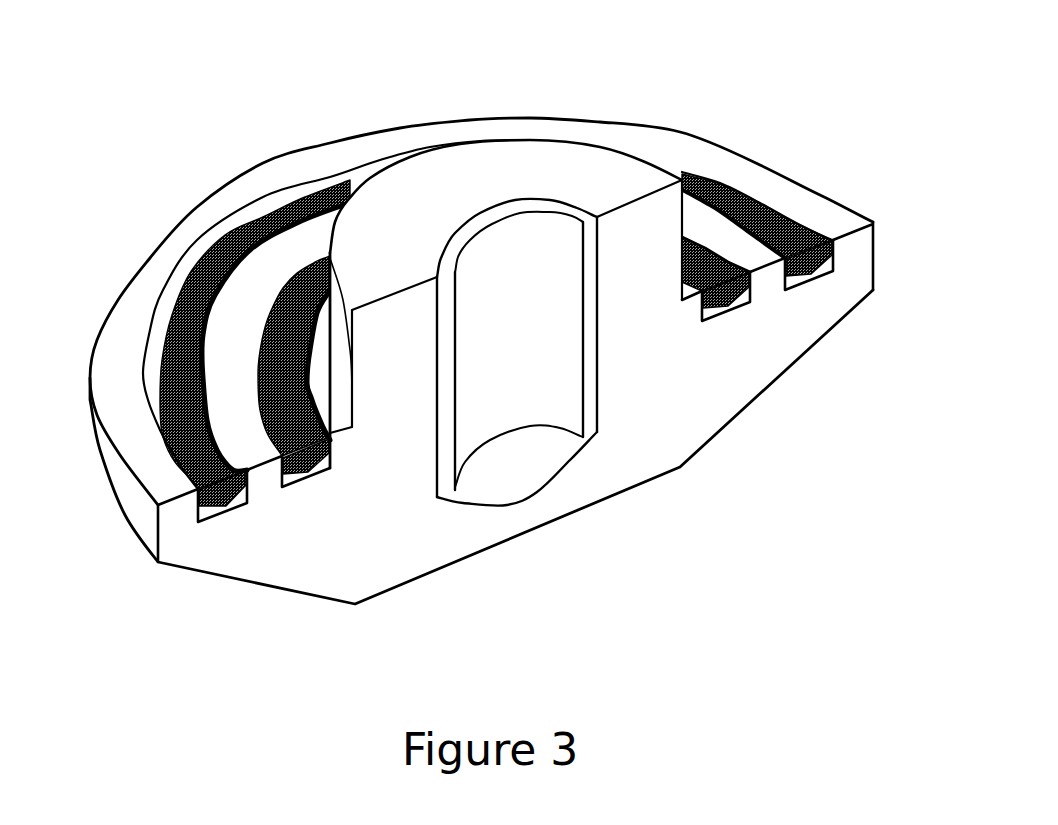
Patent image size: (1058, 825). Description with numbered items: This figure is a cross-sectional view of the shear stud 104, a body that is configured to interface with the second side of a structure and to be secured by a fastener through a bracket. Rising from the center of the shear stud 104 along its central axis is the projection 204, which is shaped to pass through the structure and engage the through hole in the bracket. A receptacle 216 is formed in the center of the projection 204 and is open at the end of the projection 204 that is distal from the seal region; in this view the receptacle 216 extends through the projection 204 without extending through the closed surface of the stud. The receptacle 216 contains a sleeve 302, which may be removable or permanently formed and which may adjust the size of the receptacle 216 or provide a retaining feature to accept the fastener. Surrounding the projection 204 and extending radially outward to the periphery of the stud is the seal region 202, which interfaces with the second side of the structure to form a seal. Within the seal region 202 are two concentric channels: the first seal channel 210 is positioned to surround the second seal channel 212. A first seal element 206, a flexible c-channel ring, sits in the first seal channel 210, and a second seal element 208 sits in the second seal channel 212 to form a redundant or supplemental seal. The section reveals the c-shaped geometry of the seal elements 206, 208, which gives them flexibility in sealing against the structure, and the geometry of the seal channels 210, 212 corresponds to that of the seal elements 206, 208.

The shear stud 104 is at (155, 60).
The seal region 202 is at (202, 225).
The projection 204 is at (446, 146).
The first seal element 206 is at (810, 228).
The second seal element 208 is at (727, 247).
The first seal channel 210 is at (833, 272).
The second seal channel 212 is at (747, 307).
The receptacle 216 is at (522, 200).
The sleeve 302 is at (567, 210).